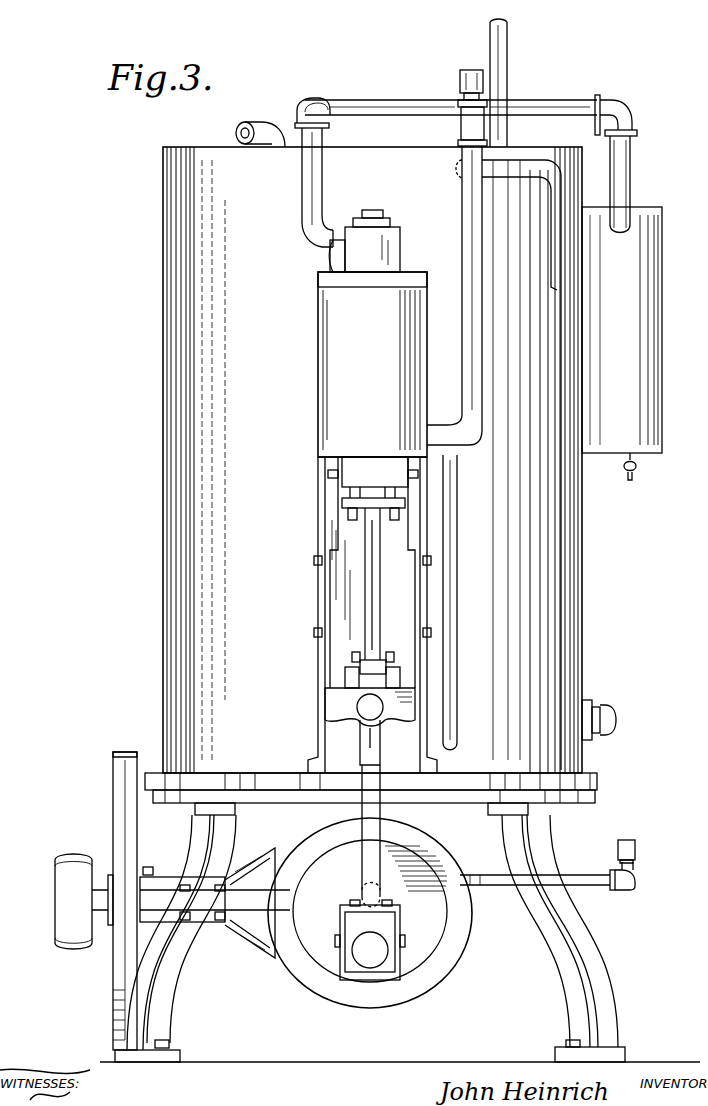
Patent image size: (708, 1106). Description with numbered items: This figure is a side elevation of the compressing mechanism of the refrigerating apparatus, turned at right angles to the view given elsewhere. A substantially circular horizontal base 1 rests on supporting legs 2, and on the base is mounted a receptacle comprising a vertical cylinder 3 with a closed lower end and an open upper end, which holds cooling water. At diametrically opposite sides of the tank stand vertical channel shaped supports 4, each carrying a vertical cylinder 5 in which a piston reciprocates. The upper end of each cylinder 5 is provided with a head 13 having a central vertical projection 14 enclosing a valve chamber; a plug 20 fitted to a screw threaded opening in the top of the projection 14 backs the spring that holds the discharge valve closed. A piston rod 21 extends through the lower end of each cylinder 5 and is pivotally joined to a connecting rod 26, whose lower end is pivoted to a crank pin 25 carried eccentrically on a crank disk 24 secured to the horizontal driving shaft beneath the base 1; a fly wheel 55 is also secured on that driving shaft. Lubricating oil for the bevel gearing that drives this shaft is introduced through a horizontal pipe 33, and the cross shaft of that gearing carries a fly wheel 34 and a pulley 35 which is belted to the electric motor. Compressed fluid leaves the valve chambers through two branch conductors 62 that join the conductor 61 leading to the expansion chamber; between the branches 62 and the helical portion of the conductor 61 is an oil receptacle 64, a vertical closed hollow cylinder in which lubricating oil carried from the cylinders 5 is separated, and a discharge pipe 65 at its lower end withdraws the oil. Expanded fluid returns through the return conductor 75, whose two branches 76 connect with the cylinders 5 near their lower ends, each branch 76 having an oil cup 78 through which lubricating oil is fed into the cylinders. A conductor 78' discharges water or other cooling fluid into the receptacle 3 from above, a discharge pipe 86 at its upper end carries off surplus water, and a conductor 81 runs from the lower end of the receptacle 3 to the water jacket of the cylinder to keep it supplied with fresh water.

The horizontal base 1 is at (597, 786).
The supporting legs 2 is at (200, 828).
The vertical cylinder 3 is at (552, 582).
The channel shaped supports 4 is at (323, 488).
The vertical cylinders 5 is at (372, 364).
The head 13 is at (408, 283).
The central vertical projection 14 is at (385, 245).
The plug 20 is at (370, 212).
The piston rods 21 is at (370, 545).
The crank disks 24 is at (383, 941).
The crank pin 25 is at (383, 958).
The connecting rods 26 is at (362, 865).
The horizontal pipe 33 is at (610, 876).
The fly wheel 34 is at (126, 760).
The pulley 35 is at (85, 835).
The fly wheel 55 is at (455, 845).
The conductor 61 is at (378, 103).
The branch conductors 62 is at (318, 160).
The oil receptacle 64 is at (622, 330).
The discharge pipe 65 is at (637, 469).
The return conductor 75 is at (497, 67).
The branches 76 is at (470, 242).
The oil cup 78 is at (471, 96).
The conductor 78' is at (260, 119).
The conductor 81 is at (450, 642).
The discharge pipe 86 is at (546, 262).